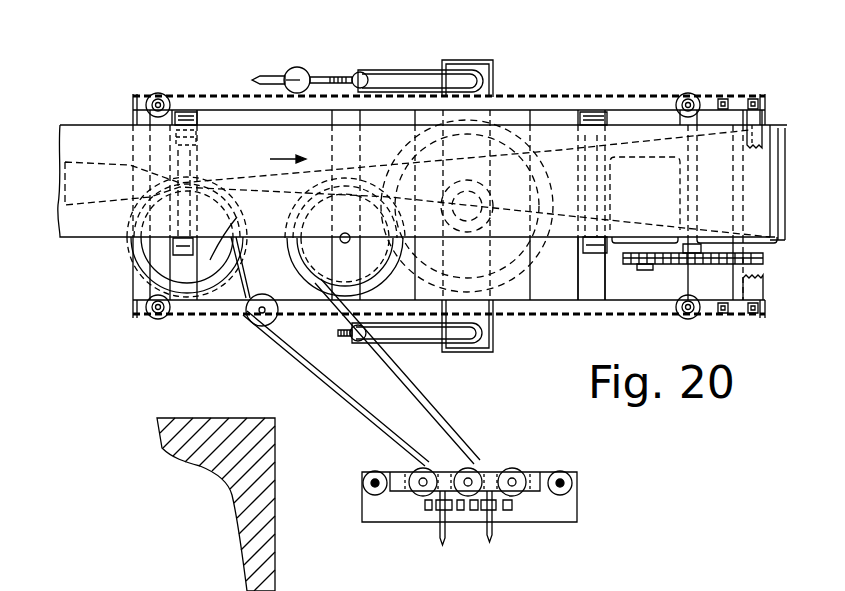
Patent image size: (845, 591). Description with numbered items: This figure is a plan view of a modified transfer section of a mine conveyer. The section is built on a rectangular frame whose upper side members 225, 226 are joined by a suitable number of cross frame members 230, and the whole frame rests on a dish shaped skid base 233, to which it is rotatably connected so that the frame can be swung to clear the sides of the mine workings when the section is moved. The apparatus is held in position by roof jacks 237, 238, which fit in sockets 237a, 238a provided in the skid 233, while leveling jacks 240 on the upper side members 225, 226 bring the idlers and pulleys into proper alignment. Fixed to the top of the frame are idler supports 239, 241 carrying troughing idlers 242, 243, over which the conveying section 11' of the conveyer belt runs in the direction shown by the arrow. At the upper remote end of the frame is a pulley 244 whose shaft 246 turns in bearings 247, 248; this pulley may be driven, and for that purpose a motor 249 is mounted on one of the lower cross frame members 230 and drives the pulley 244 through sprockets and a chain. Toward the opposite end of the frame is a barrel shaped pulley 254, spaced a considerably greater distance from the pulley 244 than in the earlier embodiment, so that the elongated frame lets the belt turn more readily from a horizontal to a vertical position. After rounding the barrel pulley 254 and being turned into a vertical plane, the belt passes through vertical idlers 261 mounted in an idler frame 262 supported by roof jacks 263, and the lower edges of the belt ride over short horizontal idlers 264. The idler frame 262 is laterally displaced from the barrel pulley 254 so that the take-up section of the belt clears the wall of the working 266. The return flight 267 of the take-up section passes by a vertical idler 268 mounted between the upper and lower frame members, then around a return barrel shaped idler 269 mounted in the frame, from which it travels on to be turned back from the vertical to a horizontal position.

The conveying section of the conveyer belt 11' is at (422, 163).
The upper side member 225 is at (235, 95).
The upper side member 226 is at (588, 313).
The cross frame member 230 is at (605, 297).
The skid base 233 is at (513, 121).
The roof jack 237 is at (385, 72).
The socket 237a is at (463, 60).
The roof jack 238 is at (393, 333).
The socket 238a is at (493, 350).
The idler support 239 is at (197, 117).
The leveling jack 240 is at (160, 93).
The idler support 241 is at (600, 118).
The troughing idler 242 is at (130, 248).
The troughing idler 243 is at (530, 258).
The pulley 244 is at (770, 243).
The shaft 246 is at (735, 272).
The bearing 247 is at (714, 105).
The bearing 248 is at (700, 320).
The motor 249 is at (680, 205).
The barrel shaped pulley 254 is at (323, 263).
The vertical idler 261 is at (517, 447).
The idler frame 262 is at (538, 472).
The roof jack 263 is at (575, 491).
The horizontal idler 264 is at (445, 510).
The wall of the working 266 is at (273, 478).
The return flight 267 is at (330, 390).
The vertical idler 268 is at (260, 295).
The return barrel shaped idler 269 is at (210, 258).